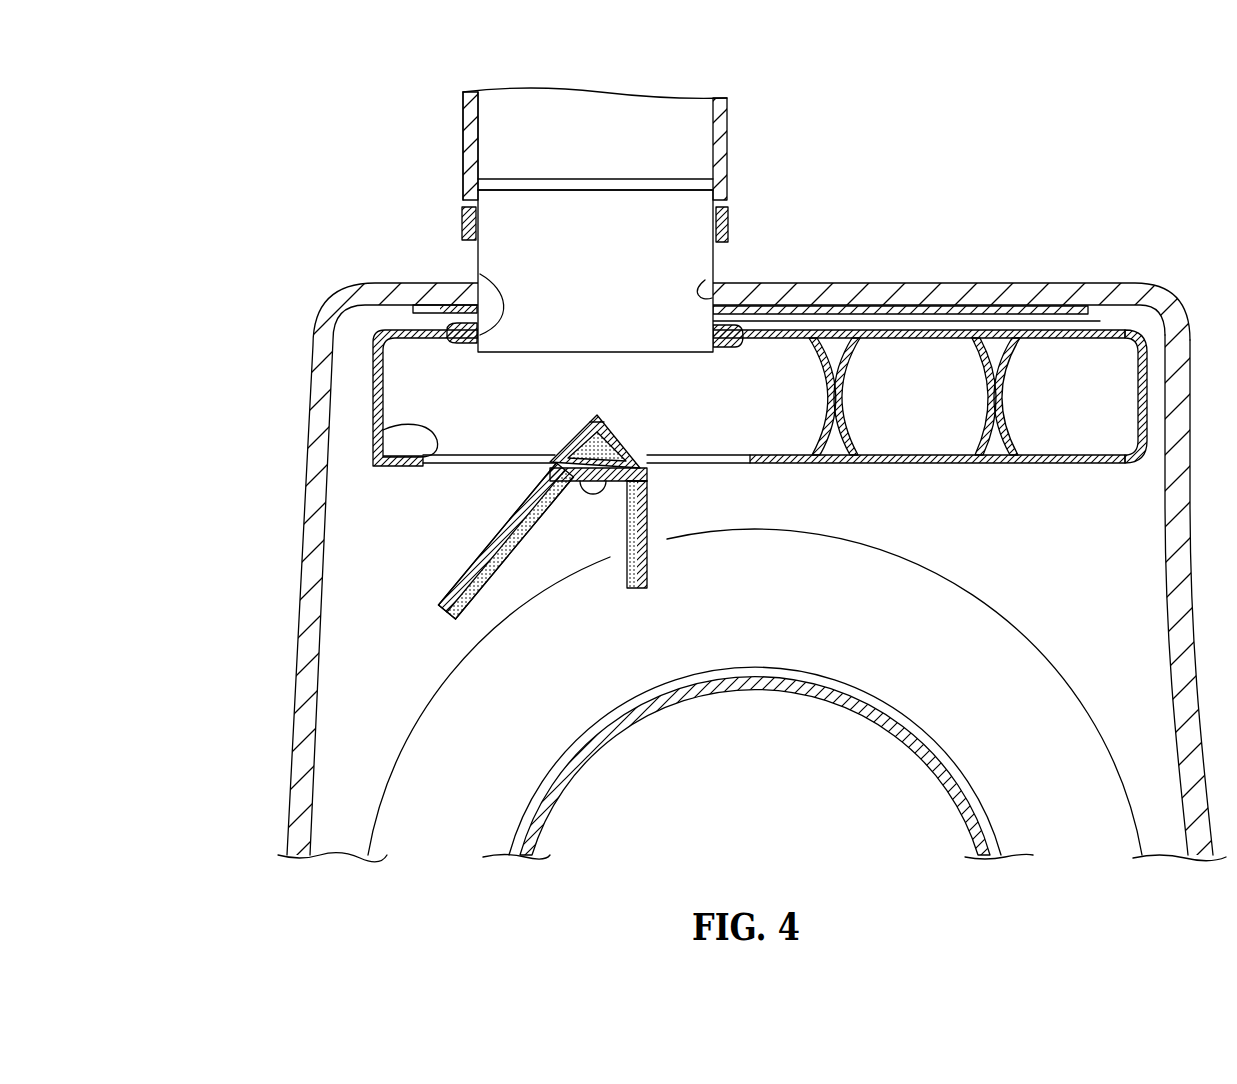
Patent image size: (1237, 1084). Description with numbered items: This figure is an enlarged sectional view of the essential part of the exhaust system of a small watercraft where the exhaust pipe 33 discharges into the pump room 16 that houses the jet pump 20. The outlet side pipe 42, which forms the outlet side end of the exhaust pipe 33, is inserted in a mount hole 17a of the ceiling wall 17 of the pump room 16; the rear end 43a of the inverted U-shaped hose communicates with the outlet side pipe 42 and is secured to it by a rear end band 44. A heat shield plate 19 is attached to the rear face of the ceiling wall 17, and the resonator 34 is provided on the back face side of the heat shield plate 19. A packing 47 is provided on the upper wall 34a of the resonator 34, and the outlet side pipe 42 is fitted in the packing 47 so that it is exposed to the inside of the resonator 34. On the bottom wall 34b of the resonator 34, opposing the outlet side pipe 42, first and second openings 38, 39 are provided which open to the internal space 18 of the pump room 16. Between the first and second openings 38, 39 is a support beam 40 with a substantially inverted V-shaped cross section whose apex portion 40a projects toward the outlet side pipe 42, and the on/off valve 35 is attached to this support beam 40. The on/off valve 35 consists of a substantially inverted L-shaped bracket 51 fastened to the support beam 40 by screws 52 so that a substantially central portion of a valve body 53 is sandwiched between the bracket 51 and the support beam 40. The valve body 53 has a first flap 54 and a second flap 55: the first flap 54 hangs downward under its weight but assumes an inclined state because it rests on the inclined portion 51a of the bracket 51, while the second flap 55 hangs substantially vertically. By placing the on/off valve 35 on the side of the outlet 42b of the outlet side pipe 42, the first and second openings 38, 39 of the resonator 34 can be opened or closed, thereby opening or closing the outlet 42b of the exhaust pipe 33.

The pump room 16 is at (1130, 275).
The ceiling wall 17 is at (1008, 290).
The mount hole 17a is at (705, 280).
The internal space 18 is at (392, 688).
The heat shield plate 19 is at (893, 287).
The jet pump 20 is at (529, 794).
The exhaust pipe 33 is at (455, 108).
The resonator 34 is at (362, 351).
The upper wall 34a is at (416, 316).
The bottom wall 34b is at (797, 466).
The on/off valve 35 is at (440, 575).
The first opening 38 is at (375, 426).
The second opening 39 is at (758, 468).
The support beam 40 is at (635, 462).
The apex portion 40a is at (597, 418).
The outlet side pipe 42 is at (635, 222).
The outlet 42b is at (490, 356).
The rear end 43a is at (722, 180).
The rear end band 44 is at (724, 214).
The packing 47 is at (480, 274).
The bracket 51 is at (569, 502).
The inclined portion 51a is at (517, 547).
The screws 52 is at (598, 491).
The valve body 53 is at (586, 447).
The first flap 54 is at (482, 545).
The second flap 55 is at (648, 530).